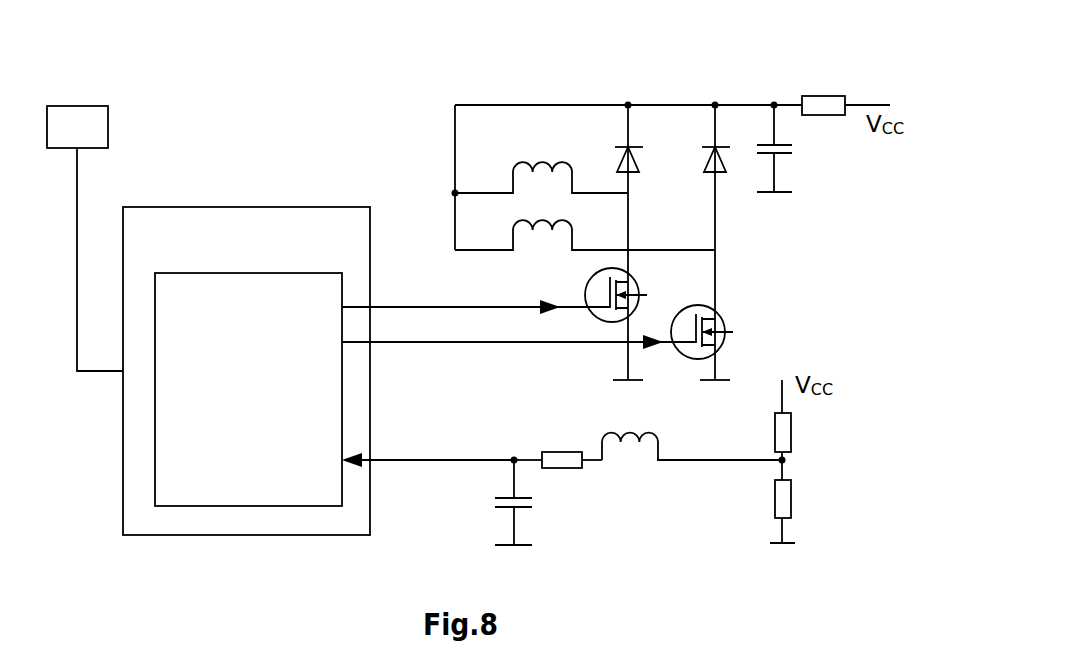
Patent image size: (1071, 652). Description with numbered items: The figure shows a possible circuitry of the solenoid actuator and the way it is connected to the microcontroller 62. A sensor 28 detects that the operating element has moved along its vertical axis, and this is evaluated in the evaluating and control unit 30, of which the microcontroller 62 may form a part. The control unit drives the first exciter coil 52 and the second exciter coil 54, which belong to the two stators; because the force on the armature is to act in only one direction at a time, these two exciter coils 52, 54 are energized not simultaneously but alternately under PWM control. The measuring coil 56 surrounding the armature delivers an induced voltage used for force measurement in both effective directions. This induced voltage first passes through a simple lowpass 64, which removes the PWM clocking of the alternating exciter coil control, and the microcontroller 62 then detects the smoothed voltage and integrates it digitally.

The sensor 28 is at (82, 125).
The evaluating and control unit 30 is at (180, 230).
The microcontroller 62 is at (253, 300).
The first exciter coil 52 is at (521, 165).
The second exciter coil 54 is at (512, 233).
The measuring coil 56 is at (606, 436).
The lowpass 64 is at (504, 438).